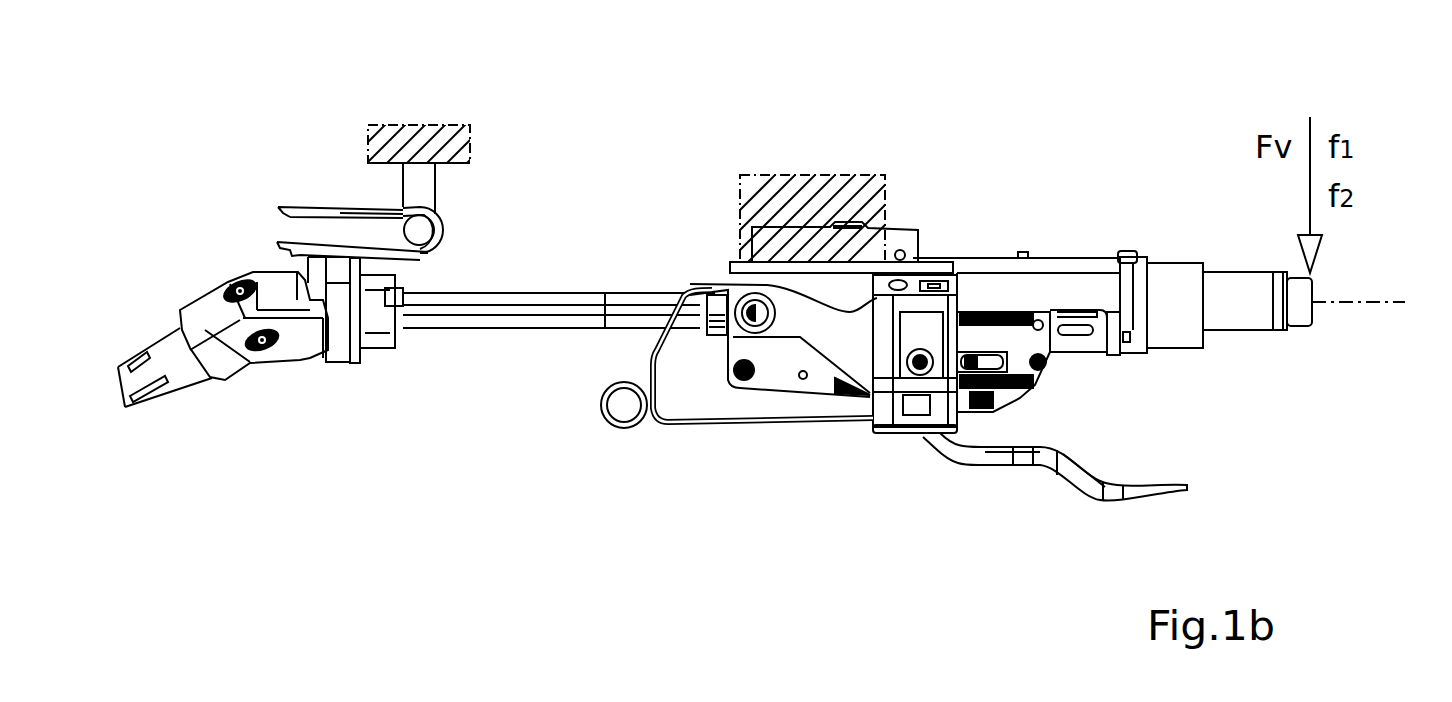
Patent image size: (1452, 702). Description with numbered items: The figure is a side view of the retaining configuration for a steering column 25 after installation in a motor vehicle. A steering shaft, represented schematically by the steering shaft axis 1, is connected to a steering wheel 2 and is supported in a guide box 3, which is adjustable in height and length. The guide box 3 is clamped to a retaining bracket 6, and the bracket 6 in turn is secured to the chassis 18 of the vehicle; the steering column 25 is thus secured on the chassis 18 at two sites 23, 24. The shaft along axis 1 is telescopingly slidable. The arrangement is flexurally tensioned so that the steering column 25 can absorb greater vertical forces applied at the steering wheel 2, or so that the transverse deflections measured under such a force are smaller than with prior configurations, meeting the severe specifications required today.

The steering shaft axis 1 is at (1390, 302).
The steering wheel 2 is at (1298, 302).
The guide box 3 is at (1040, 298).
The retaining bracket 6 is at (915, 237).
The chassis 18 is at (420, 147).
The securing site 23 is at (745, 245).
The securing site 24 is at (340, 205).
The steering column 25 is at (737, 399).